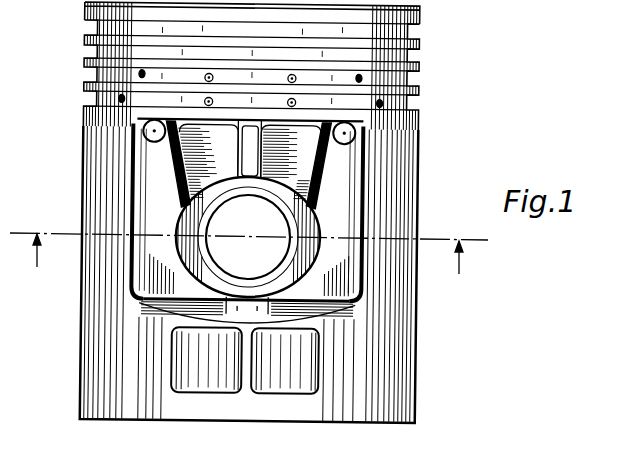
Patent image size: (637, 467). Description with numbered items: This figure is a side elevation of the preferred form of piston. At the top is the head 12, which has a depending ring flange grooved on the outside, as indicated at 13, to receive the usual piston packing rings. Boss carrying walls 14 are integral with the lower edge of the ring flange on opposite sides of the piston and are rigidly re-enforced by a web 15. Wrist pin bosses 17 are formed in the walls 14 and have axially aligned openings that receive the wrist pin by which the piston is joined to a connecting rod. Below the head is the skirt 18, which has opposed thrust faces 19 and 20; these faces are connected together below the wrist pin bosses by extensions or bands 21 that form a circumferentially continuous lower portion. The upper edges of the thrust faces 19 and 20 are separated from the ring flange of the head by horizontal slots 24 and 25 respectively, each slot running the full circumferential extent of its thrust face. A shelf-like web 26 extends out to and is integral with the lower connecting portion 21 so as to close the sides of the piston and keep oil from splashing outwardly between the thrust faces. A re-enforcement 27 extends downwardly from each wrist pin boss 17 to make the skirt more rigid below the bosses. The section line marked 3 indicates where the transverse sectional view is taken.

The section line 3- 3 is at (249, 253).
The head 12 is at (418, 13).
The grooves 13 is at (408, 32).
The boss carrying walls 14 is at (193, 160).
The web 15 is at (248, 156).
The wrist pin bosses 17 is at (280, 273).
The skirt 18 is at (358, 398).
The thrust face 19 is at (103, 197).
The thrust face 20 is at (403, 198).
The extensions or bands 21 is at (228, 403).
The horizontal slot 24 is at (95, 125).
The horizontal slot 25 is at (356, 128).
The shelf-like web 26 is at (168, 305).
The re-enforcement 27 is at (252, 307).